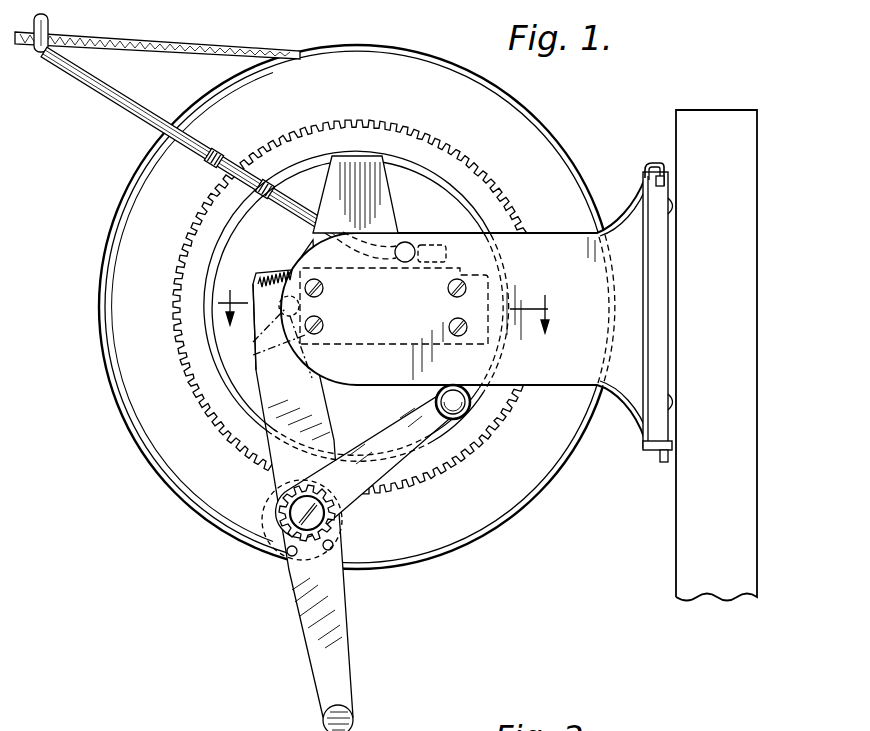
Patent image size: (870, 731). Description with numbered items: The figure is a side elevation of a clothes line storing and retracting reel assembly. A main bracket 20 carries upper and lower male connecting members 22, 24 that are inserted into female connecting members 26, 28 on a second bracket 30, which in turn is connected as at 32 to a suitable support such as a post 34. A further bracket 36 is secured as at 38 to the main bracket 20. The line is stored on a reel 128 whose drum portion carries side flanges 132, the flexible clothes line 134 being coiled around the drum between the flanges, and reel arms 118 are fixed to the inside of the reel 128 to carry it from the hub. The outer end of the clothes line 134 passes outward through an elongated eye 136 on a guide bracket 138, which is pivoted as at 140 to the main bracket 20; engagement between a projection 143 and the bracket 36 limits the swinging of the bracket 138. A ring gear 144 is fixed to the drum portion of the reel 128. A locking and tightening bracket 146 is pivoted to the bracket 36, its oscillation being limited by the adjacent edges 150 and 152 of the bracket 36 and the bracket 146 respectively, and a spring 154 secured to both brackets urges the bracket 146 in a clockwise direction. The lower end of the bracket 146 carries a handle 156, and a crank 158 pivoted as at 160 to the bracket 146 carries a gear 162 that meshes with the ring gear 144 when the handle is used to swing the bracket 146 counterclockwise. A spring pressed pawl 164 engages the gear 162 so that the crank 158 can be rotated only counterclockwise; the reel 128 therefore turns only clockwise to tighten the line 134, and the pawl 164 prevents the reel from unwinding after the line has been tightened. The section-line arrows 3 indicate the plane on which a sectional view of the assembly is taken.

The section line 3- 3 is at (390, 299).
The main bracket 20 is at (553, 386).
The upper male connecting member 22 is at (650, 160).
The lower male connecting member 24 is at (662, 464).
The upper female connecting member 26 is at (661, 176).
The lower female connecting member 28 is at (648, 452).
The bracket 30 is at (668, 305).
The connection 32 is at (666, 206).
The post 34 is at (752, 158).
The bracket 36 is at (473, 276).
The securing point 38 is at (324, 321).
The reel arms 118 is at (256, 342).
The reel 128 is at (481, 541).
The side flanges 132 is at (525, 500).
The clothes line 134 is at (176, 41).
The elongated eye 136 is at (50, 22).
The bracket 138 is at (207, 148).
The pivot 140 is at (408, 243).
The projection 143 is at (437, 247).
The ring gear 144 is at (359, 316).
The locking and tightening bracket 146 is at (345, 619).
The edge 150 is at (299, 406).
The edge 152 is at (313, 267).
The spring 154 is at (273, 278).
The handle 156 is at (356, 720).
The crank 158 is at (414, 488).
The pivot 160 is at (294, 528).
The gear 162 is at (285, 500).
The spring pressed pawl 164 is at (330, 531).